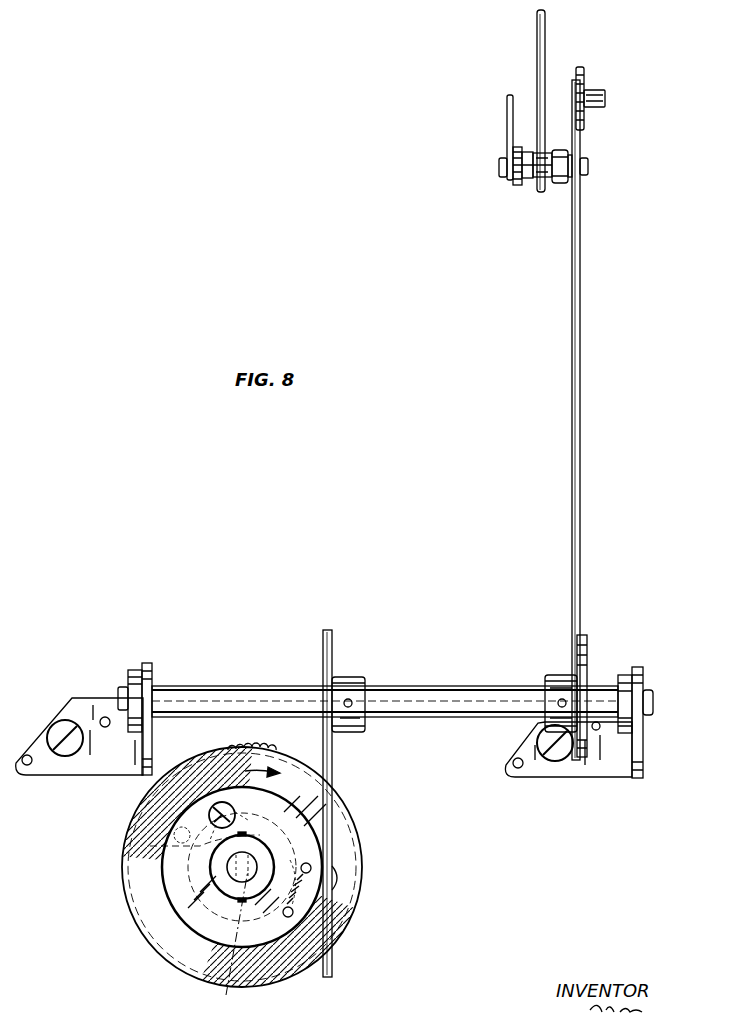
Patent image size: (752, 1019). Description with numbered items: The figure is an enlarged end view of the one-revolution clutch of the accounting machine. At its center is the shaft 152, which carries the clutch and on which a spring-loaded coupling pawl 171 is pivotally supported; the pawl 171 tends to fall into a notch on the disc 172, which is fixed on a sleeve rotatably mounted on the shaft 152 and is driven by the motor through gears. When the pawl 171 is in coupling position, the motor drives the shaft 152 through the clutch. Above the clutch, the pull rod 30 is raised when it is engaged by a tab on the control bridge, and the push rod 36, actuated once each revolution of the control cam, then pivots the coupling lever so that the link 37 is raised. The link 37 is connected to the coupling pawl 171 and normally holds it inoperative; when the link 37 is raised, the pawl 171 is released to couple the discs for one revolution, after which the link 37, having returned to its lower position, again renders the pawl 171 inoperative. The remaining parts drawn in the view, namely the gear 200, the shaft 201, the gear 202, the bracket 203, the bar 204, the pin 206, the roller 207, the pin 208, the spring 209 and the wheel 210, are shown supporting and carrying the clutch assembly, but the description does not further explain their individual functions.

The pull rod 30 is at (546, 26).
The push rod 36 is at (585, 72).
The link 37 is at (581, 272).
The shaft 152 is at (232, 880).
The coupling pawl 171 is at (310, 837).
The disc 172 is at (237, 943).
The gear 200 is at (588, 648).
The shaft 201 is at (443, 690).
The gear 202 is at (153, 668).
The bracket 203 is at (640, 780).
The bar 204 is at (333, 955).
The pin 206 is at (338, 875).
The roller 207 is at (215, 803).
The pin 208 is at (174, 835).
The spring 209 is at (333, 895).
The wheel 210 is at (315, 793).